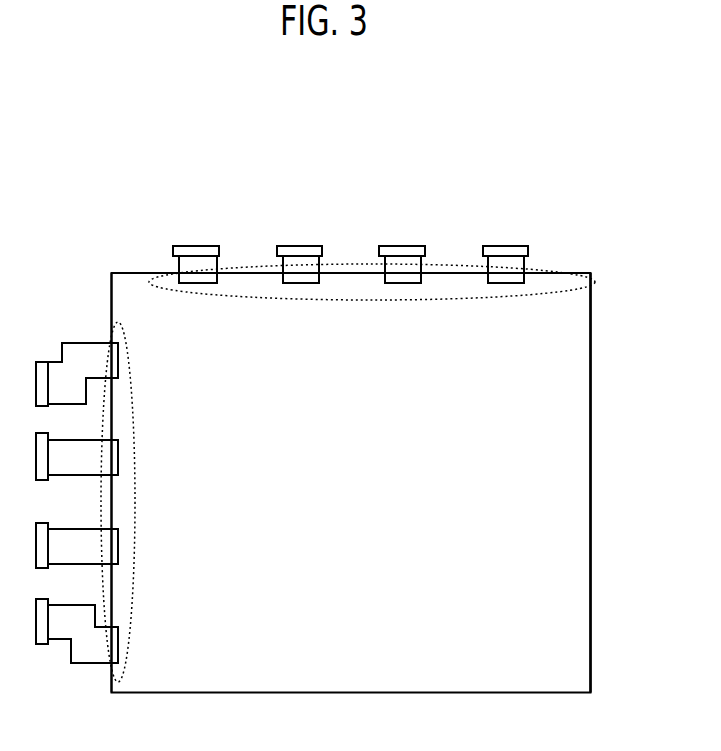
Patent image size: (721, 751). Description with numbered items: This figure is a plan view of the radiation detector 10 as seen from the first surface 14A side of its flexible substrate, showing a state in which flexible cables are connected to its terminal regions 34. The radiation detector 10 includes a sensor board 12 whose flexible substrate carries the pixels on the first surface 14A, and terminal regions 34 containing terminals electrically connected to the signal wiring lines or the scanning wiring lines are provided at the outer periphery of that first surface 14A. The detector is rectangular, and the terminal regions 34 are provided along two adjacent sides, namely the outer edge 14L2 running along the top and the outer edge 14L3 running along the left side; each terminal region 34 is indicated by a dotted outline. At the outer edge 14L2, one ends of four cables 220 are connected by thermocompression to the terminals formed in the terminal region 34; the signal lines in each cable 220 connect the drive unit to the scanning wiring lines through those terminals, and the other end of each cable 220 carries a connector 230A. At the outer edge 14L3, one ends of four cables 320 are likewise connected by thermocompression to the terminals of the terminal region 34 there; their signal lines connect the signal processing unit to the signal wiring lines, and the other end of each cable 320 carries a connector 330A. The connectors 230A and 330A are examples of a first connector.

The radiation detector 10 is at (583, 582).
The sensor board 12 is at (577, 450).
The first surface 14A is at (577, 388).
The outer edge 14L2 is at (143, 285).
The outer edge 14L3 is at (123, 305).
The connector 230A is at (194, 246).
The cable 220 is at (512, 262).
The cable 320 is at (99, 356).
The connector 330A is at (42, 646).
The terminal region 34 is at (594, 283).